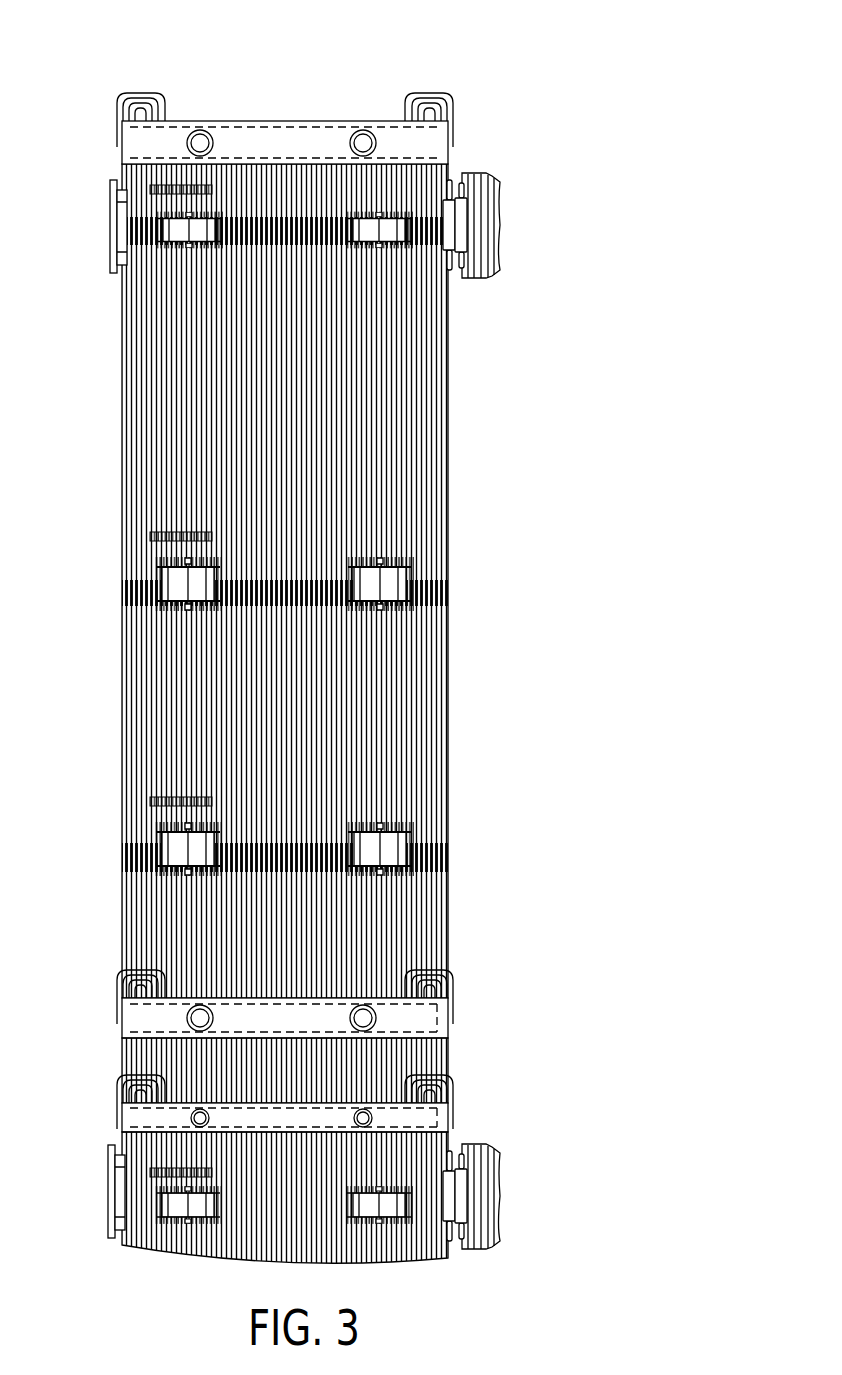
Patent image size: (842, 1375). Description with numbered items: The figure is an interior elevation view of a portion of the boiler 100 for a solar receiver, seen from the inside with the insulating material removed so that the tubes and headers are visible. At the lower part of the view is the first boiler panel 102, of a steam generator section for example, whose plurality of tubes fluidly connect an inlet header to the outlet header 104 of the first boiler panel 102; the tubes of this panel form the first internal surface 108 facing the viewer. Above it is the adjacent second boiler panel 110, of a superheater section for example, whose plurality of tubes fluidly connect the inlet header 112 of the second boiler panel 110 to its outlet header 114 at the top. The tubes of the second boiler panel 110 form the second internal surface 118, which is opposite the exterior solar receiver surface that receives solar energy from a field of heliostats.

The boiler 100 is at (477, 56).
The first boiler panel 102 is at (300, 1086).
The outlet header 104 is at (122, 1122).
The first internal surface 108 is at (300, 1209).
The second boiler panel 110 is at (122, 362).
The inlet header 112 is at (300, 1030).
The outlet header 114 is at (277, 137).
The second internal surface 118 is at (302, 411).